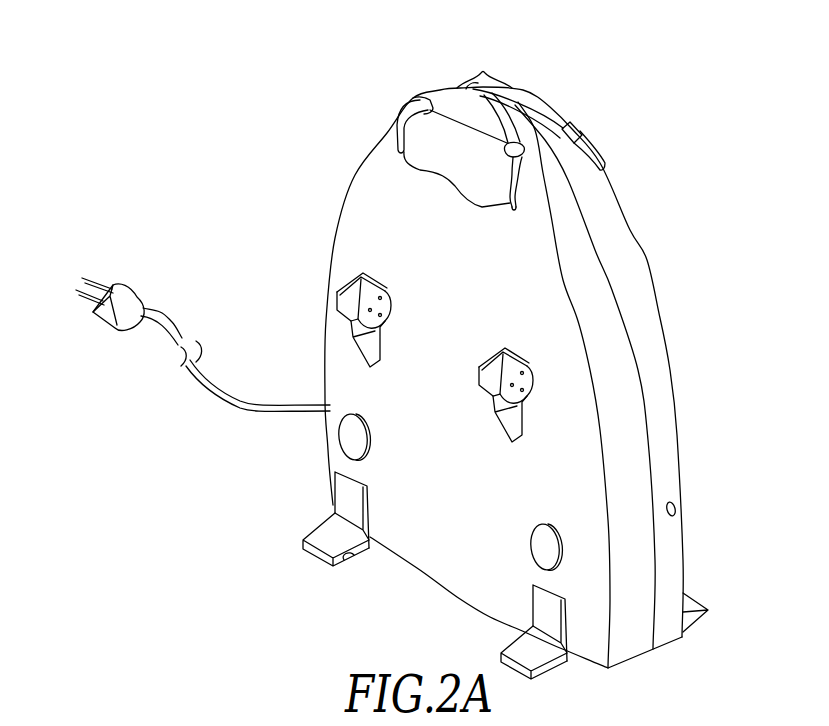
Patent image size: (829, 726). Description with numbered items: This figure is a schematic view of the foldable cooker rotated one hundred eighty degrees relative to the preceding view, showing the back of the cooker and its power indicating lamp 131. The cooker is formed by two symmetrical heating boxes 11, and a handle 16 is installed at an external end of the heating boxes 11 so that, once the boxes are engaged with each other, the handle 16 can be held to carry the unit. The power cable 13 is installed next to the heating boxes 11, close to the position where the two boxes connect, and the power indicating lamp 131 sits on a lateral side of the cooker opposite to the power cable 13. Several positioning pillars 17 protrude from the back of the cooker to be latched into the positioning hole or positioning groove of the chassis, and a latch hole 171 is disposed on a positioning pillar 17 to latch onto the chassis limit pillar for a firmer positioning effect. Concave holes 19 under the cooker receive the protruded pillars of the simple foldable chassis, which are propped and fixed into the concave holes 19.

The heating box 11 is at (588, 268).
The power cable 13 is at (119, 302).
The handle 16 is at (483, 72).
The positioning pillar 17 is at (485, 394).
The concave hole 19 is at (340, 437).
The power indicating lamp 131 is at (673, 510).
The latch hole 171 is at (350, 562).